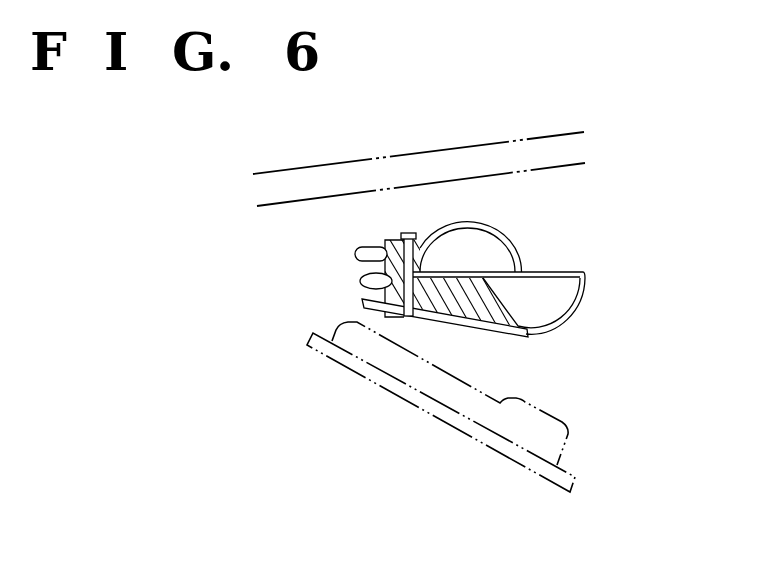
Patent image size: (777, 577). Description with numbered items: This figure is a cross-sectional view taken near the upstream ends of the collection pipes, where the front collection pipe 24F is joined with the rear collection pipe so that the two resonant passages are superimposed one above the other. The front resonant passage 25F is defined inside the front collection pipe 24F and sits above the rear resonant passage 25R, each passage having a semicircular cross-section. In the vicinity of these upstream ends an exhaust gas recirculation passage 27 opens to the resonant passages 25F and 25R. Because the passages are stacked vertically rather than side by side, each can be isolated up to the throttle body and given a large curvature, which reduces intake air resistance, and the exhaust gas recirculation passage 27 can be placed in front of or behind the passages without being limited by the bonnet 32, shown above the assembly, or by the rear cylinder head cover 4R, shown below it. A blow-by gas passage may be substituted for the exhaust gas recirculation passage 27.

The bonnet 32 is at (280, 168).
The exhaust gas recirculation passage 27 is at (362, 269).
The front collection pipe 24F is at (482, 223).
The front resonant passage 25F is at (442, 230).
The rear resonant passage 25R is at (536, 331).
The rear cylinder head cover 4R is at (568, 422).